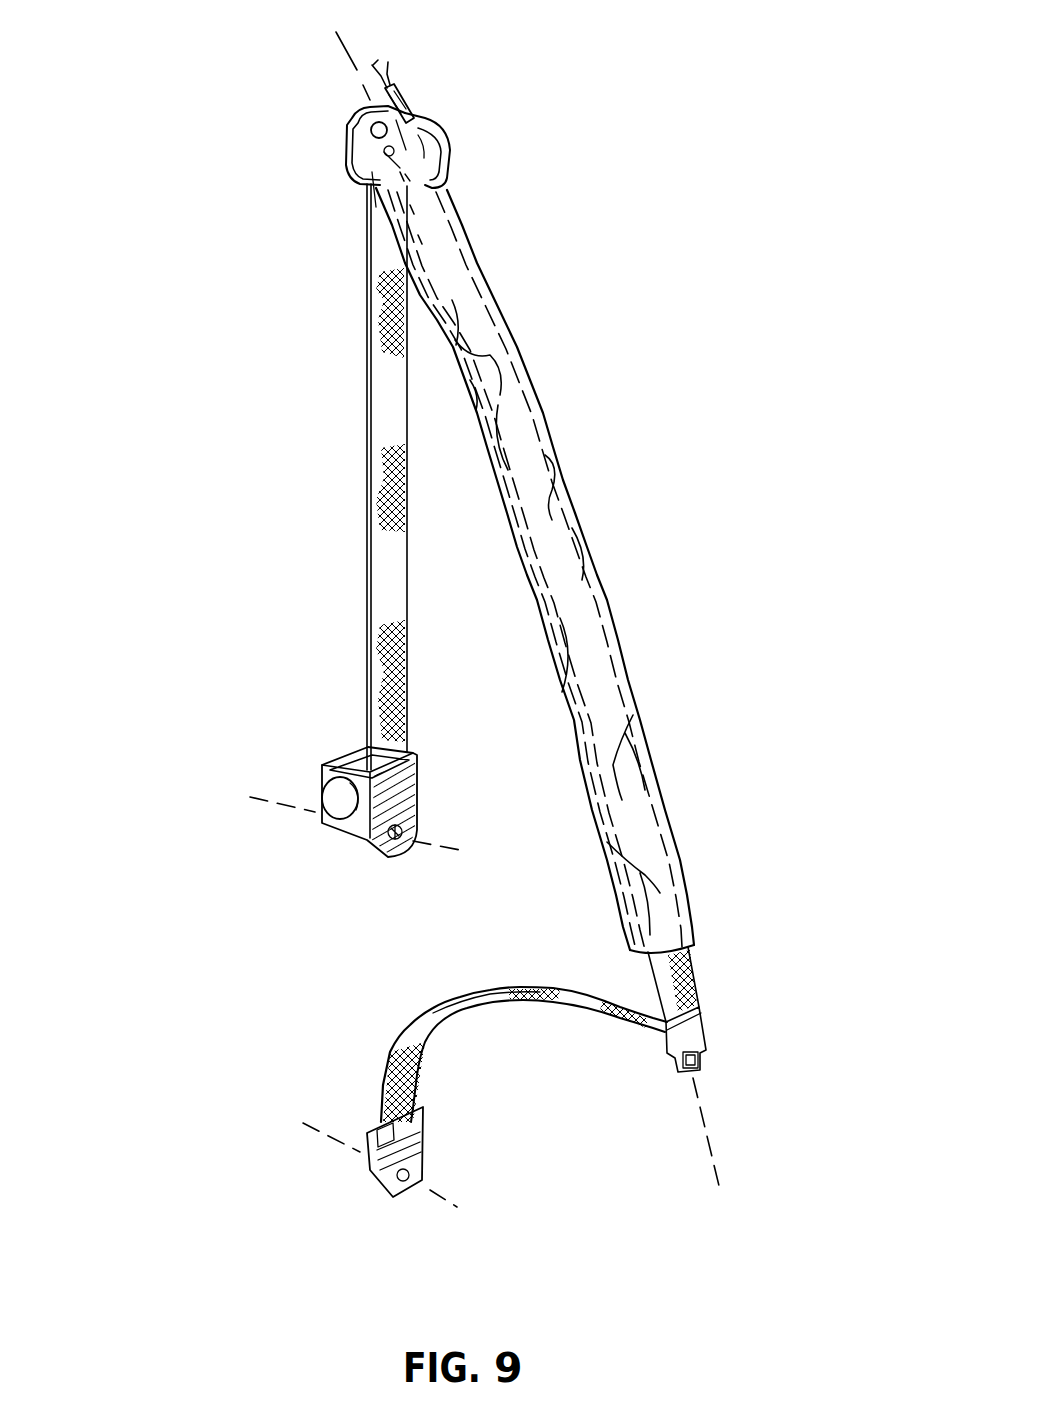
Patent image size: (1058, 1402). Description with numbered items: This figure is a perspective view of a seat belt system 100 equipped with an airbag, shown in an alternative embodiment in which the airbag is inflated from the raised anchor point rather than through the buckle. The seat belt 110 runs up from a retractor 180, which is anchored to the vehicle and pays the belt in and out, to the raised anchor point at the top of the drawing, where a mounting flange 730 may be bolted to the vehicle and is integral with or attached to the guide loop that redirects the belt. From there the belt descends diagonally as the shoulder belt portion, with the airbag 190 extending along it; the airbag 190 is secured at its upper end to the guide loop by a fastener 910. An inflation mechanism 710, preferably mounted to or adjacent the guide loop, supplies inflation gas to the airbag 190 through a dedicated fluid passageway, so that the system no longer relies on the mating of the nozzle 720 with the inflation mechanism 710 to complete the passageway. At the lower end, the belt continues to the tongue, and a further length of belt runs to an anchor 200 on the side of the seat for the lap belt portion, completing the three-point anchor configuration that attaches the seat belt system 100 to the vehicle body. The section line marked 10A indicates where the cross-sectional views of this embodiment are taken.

The seat belt system 100 is at (603, 423).
The seat belt 110 is at (370, 537).
The retractor 180 is at (327, 766).
The airbag 190 is at (572, 733).
The anchor 200 is at (432, 1150).
The inflation mechanism 710 is at (418, 115).
The nozzle 720 is at (450, 156).
The mounting flange 730 is at (356, 120).
The fastener 910 is at (384, 150).
The section line 10A is at (330, 30).